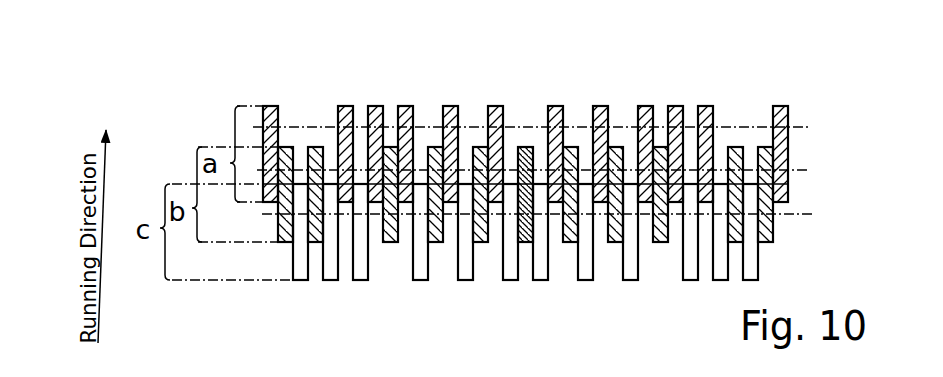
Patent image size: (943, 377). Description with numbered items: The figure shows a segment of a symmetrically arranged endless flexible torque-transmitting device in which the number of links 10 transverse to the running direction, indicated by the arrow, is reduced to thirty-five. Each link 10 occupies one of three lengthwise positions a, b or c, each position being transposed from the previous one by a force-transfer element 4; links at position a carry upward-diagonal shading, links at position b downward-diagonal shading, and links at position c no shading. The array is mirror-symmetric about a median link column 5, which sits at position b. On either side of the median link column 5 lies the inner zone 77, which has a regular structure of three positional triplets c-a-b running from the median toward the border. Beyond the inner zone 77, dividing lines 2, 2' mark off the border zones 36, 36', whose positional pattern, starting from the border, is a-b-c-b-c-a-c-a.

The border zone 36 is at (306, 111).
The dividing line 2 is at (402, 123).
The links 10 is at (522, 147).
The median link column 5 is at (525, 279).
The inner zone 77 is at (561, 96).
The force-transfer element 4 is at (613, 145).
The dividing line 2' is at (650, 123).
The border zone 36' is at (769, 108).